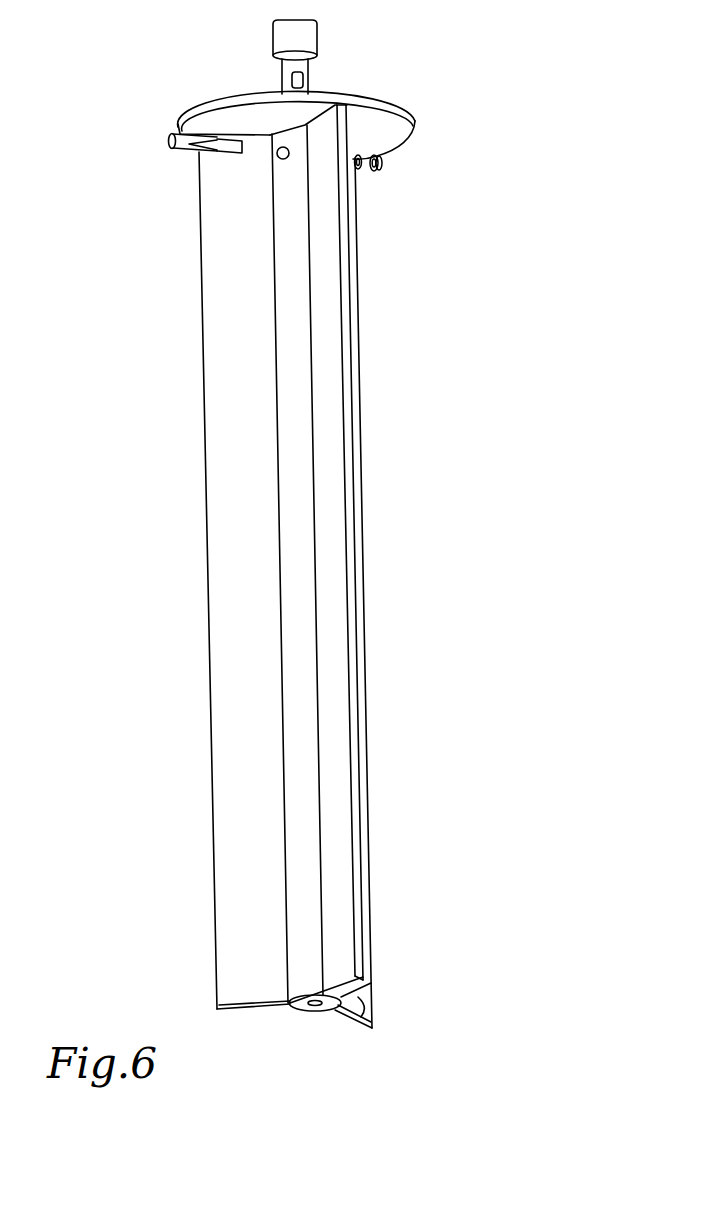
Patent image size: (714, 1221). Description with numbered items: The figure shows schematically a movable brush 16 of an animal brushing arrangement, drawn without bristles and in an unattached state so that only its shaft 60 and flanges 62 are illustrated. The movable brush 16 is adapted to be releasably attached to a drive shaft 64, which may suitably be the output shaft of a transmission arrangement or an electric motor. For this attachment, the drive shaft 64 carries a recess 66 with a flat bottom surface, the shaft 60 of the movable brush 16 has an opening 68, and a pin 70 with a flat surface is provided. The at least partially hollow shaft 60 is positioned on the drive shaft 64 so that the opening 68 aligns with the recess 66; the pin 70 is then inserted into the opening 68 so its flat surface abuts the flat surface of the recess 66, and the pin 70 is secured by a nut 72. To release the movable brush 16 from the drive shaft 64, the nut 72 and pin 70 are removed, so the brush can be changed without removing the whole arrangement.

The movable brush 16 is at (463, 307).
The shaft 60 is at (295, 607).
The flanges 62 is at (338, 956).
The drive shaft 64 is at (283, 42).
The recess 66 is at (302, 81).
The opening 68 is at (275, 153).
The pin 70 is at (186, 152).
The nut 72 is at (378, 172).